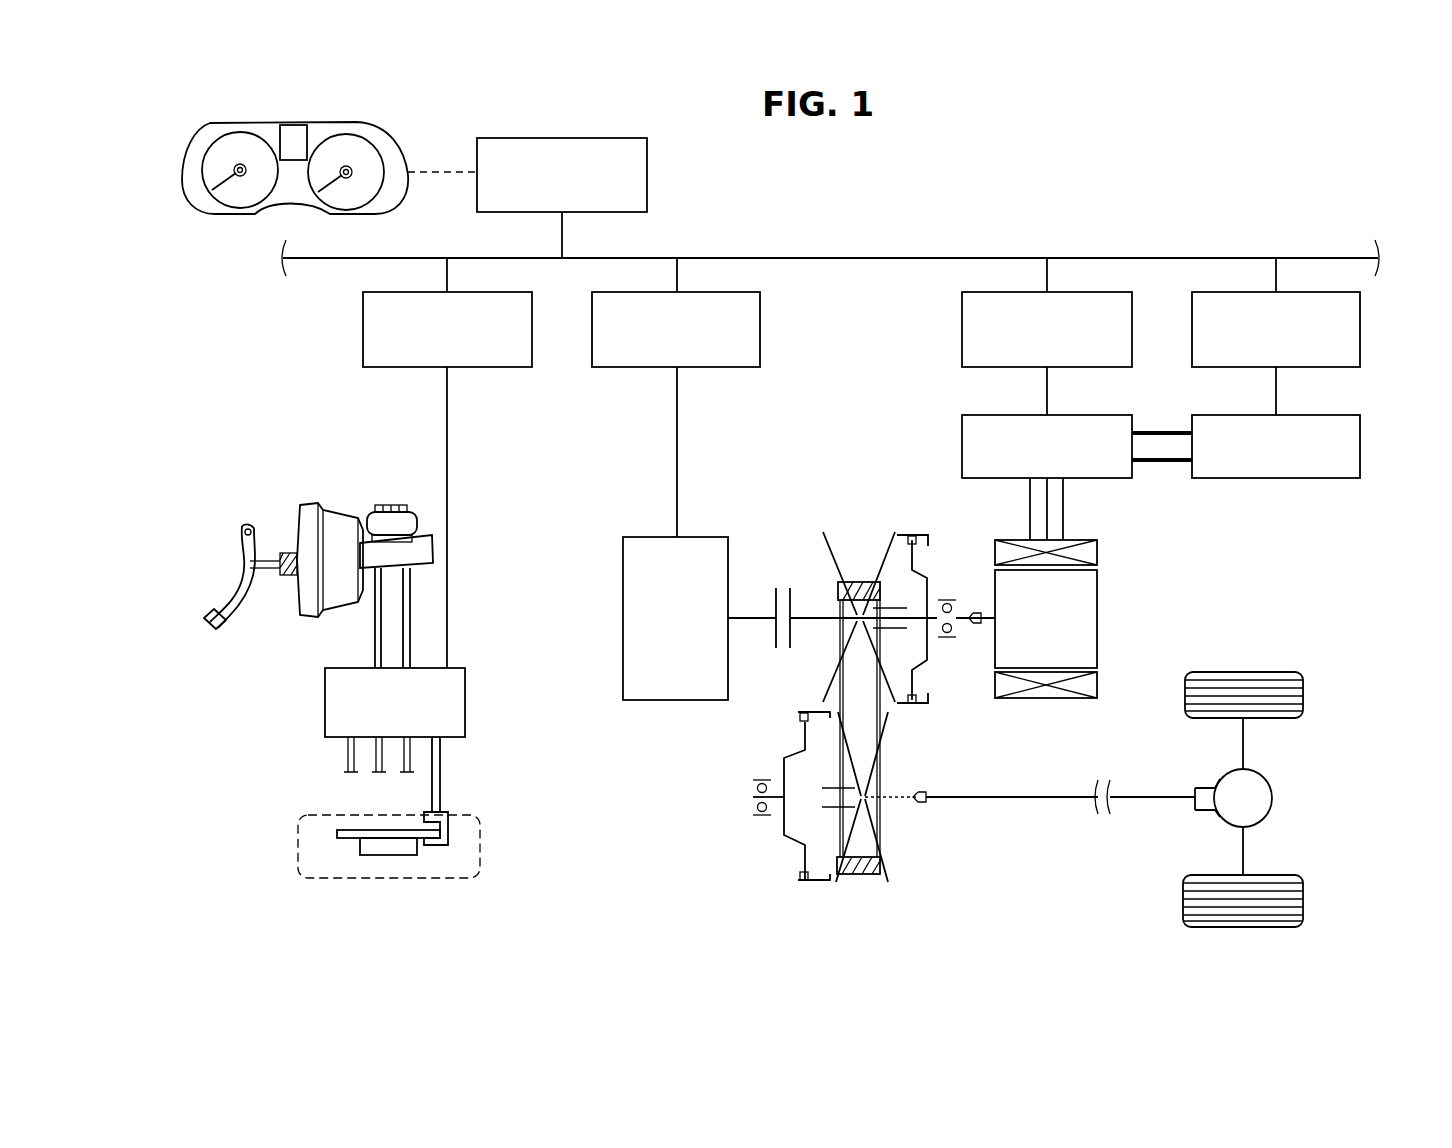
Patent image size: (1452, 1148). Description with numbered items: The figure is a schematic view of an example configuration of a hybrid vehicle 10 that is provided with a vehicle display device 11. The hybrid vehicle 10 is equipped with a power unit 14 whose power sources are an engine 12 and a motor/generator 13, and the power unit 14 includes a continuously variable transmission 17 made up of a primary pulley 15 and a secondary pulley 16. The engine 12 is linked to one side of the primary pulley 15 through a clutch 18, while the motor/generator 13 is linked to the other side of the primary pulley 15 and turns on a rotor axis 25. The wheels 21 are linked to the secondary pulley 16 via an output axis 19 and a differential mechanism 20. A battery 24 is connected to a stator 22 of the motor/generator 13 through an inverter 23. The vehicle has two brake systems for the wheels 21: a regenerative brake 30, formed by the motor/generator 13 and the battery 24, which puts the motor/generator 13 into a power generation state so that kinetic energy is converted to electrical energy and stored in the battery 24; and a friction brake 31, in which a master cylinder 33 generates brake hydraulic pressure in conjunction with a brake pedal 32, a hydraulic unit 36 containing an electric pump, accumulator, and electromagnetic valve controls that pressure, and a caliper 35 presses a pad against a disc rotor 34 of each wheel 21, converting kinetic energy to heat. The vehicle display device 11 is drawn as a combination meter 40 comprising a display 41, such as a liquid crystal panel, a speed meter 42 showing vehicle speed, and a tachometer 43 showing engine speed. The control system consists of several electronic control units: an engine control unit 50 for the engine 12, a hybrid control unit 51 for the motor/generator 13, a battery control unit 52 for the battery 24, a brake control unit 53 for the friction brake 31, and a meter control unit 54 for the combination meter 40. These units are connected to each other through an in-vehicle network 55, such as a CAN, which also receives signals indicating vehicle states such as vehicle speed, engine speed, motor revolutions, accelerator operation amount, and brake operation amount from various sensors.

The hybrid vehicle 10 is at (1292, 144).
The vehicle display device 11 is at (620, 177).
The engine 12 is at (710, 537).
The motor/generator 13 is at (1096, 611).
The power unit 14 is at (794, 695).
The primary pulley 15 is at (930, 563).
The secondary pulley 16 is at (882, 850).
The continuously variable transmission 17 is at (765, 845).
The clutch 18 is at (782, 588).
The output axis 19 is at (1013, 797).
The differential mechanism 20 is at (1272, 793).
The wheels 21 is at (1303, 693).
The stator 22 is at (1098, 553).
The inverter 23 is at (962, 440).
The battery 24 is at (1360, 440).
The rotor axis 25 is at (980, 627).
The regenerative brake 30 is at (1168, 622).
The friction brake 31 is at (337, 644).
The brake pedal 32 is at (212, 612).
The master cylinder 33 is at (430, 535).
The disc rotor 34 is at (340, 830).
The caliper 35 is at (450, 822).
The hydraulic unit 36 is at (325, 698).
The combination meter 40 is at (329, 169).
The display 41 is at (297, 134).
The speed meter 42 is at (343, 198).
The tachometer 43 is at (232, 200).
The engine control unit 50 is at (760, 316).
The hybrid control unit 51 is at (962, 316).
The battery control unit 52 is at (1360, 316).
The brake control unit 53 is at (363, 316).
The meter control unit 54 is at (647, 193).
The in-vehicle network 55 is at (968, 257).